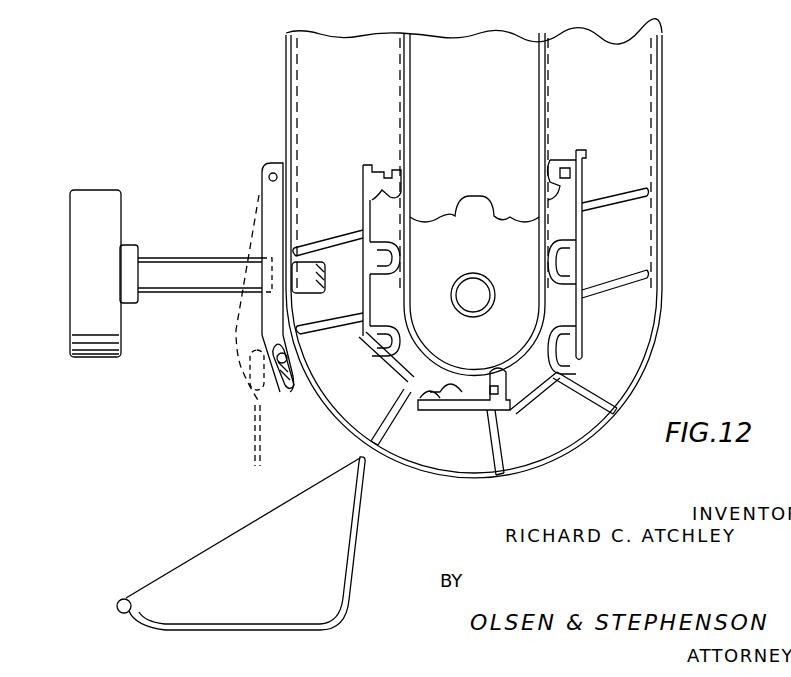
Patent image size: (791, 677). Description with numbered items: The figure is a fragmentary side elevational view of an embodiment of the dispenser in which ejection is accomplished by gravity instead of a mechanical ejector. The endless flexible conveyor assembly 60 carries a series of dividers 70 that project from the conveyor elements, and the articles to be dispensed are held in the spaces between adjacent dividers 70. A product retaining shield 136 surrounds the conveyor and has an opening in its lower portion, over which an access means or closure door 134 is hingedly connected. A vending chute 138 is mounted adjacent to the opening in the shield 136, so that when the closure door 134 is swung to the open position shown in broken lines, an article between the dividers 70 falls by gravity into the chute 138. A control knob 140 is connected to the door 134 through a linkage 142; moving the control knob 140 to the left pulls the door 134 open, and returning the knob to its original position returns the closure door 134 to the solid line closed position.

The endless flexible conveyor assembly 60 is at (468, 426).
The divider 70 is at (310, 322).
The closure door 134 is at (260, 422).
The product retaining shield 136 is at (291, 63).
The vending chute 138 is at (355, 528).
The control knob 140 is at (80, 343).
The linkage 142 is at (272, 228).